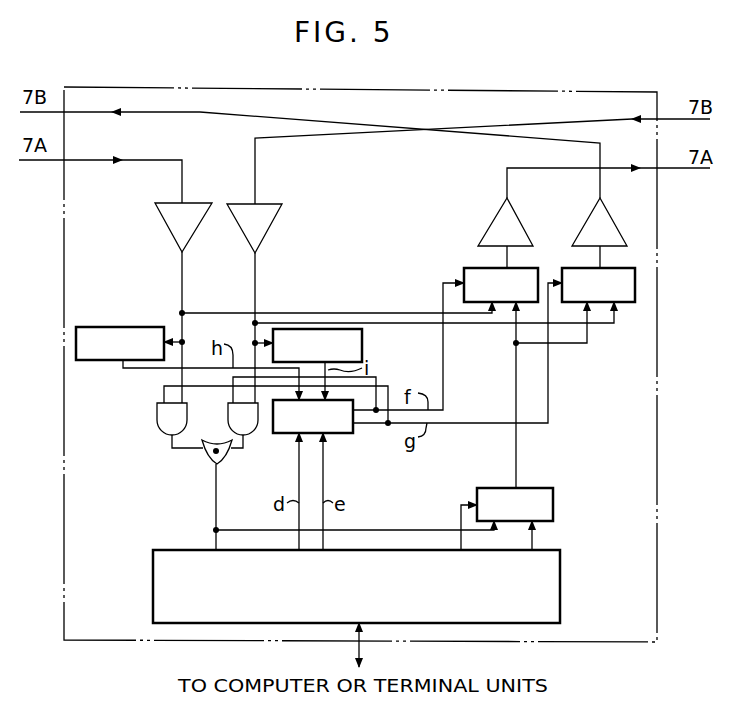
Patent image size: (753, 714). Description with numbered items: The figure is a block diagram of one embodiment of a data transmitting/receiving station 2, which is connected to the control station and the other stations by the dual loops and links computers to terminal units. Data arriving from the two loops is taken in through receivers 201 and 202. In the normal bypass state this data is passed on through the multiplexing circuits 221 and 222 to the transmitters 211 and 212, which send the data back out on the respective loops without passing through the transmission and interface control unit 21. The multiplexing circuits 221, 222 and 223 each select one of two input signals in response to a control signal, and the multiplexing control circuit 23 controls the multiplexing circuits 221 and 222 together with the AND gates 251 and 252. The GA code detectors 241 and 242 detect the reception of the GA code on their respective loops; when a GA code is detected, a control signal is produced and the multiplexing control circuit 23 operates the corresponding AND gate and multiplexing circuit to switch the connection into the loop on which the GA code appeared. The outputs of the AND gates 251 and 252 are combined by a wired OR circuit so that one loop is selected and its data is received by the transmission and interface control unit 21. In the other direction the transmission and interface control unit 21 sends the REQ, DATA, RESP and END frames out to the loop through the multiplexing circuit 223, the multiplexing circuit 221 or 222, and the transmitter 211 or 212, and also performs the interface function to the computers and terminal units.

The data transmitting/receiving station 2 is at (657, 412).
The transmission and interface control unit 21 is at (560, 575).
The multiplexing control circuit 23 is at (340, 433).
The receiver 201 is at (166, 222).
The receiver 202 is at (272, 218).
The transmitter 211 is at (487, 232).
The transmitter 212 is at (632, 228).
The multiplexing circuit 221 is at (463, 272).
The multiplexing circuit 222 is at (636, 283).
The multiplexing circuit 223 is at (530, 488).
The GA code detector 241 is at (130, 327).
The GA code detector 242 is at (364, 342).
The AND gate 251 is at (157, 427).
The AND gate 252 is at (258, 432).